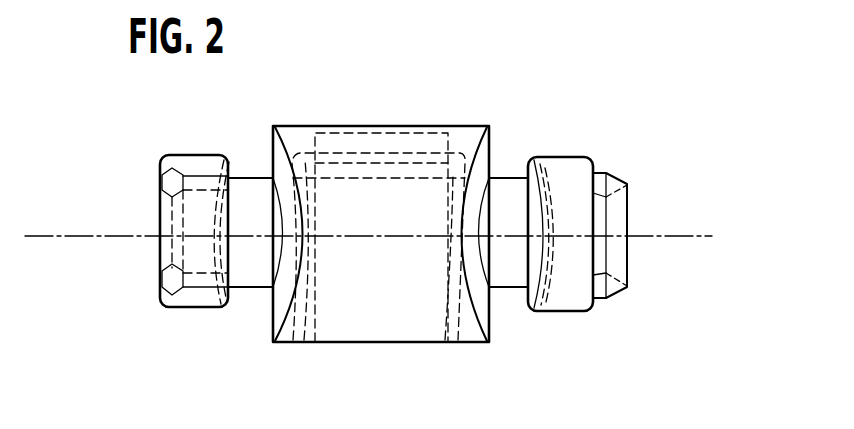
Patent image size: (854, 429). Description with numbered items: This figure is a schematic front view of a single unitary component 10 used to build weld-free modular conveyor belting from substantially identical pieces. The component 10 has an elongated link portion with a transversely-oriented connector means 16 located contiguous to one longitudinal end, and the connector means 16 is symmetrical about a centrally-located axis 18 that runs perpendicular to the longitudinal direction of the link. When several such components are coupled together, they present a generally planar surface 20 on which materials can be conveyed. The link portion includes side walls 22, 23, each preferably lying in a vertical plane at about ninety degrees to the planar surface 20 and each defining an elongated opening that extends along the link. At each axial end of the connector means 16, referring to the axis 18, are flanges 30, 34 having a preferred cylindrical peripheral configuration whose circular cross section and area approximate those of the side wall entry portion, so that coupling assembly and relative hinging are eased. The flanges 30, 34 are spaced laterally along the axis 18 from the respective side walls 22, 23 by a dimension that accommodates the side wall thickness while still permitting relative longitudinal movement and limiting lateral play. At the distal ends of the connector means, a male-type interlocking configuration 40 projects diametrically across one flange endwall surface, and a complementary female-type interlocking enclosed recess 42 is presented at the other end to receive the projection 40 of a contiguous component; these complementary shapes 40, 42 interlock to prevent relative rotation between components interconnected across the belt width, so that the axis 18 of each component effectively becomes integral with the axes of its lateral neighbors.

The unitary component 10 is at (401, 358).
The connector means 16 is at (144, 164).
The axis 18 is at (683, 238).
The planar surface 20 is at (434, 128).
The side wall 22 is at (273, 147).
The side wall 23 is at (483, 156).
The flange 30 is at (200, 304).
The flange 34 is at (572, 311).
The male-type interlocking configuration 40 is at (628, 270).
The female-type interlocking enclosed recess 42 is at (160, 247).